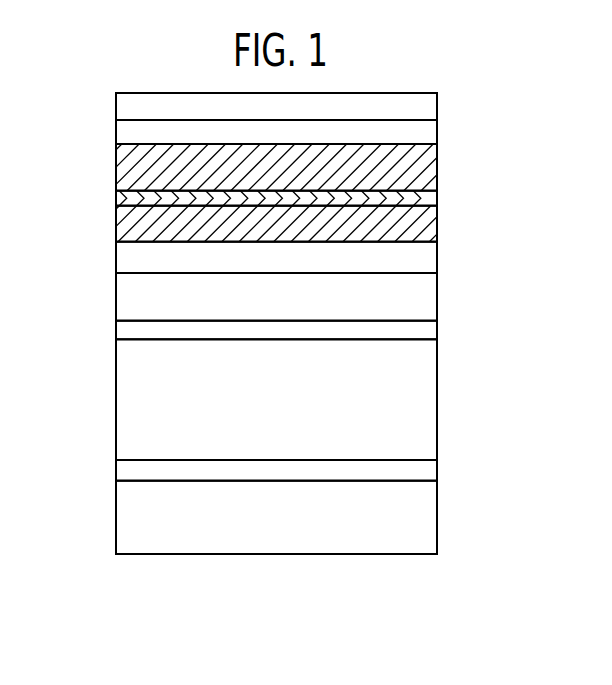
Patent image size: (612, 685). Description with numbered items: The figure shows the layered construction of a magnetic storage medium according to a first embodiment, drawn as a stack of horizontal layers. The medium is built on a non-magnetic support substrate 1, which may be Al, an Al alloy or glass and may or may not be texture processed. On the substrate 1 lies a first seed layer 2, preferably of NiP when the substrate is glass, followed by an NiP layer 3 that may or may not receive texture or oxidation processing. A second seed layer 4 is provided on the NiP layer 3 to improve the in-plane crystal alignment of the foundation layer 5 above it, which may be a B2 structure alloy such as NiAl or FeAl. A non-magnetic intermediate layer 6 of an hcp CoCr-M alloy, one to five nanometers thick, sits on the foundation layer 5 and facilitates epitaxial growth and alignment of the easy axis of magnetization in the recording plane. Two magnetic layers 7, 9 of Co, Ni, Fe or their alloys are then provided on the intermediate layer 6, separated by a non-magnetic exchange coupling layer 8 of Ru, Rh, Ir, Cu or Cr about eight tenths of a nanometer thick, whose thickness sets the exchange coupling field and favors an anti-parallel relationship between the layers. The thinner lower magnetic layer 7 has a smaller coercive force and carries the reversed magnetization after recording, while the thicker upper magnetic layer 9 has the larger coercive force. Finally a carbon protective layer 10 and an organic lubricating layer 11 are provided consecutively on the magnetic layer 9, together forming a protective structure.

The non-magnetic support substrate 1 is at (428, 513).
The first seed layer 2 is at (428, 467).
The NiP layer 3 is at (428, 397).
The second seed layer 4 is at (428, 328).
The foundation layer 5 is at (428, 293).
The non-magnetic intermediate layer 6 is at (428, 257).
The magnetic layer 7 is at (127, 223).
The non-magnetic exchange coupling layer 8 is at (127, 197).
The magnetic layer 9 is at (428, 167).
The protective layer 10 is at (428, 131).
The lubricating layer 11 is at (428, 105).